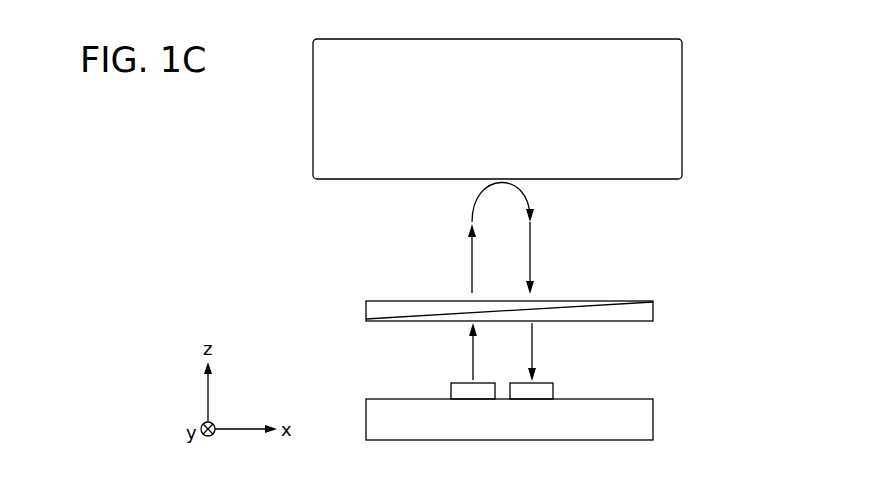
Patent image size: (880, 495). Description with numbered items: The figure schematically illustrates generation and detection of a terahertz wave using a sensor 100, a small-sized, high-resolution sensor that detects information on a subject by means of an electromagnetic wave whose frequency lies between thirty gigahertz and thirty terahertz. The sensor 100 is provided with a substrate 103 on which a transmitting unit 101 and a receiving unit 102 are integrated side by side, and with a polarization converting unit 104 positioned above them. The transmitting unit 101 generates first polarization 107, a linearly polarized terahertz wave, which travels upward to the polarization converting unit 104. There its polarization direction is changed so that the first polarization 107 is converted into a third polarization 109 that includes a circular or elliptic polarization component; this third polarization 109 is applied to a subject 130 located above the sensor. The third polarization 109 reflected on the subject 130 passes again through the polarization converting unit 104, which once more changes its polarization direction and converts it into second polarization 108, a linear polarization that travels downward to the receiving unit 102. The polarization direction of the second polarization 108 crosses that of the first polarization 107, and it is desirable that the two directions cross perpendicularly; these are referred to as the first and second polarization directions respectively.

The sensor 100 is at (517, 480).
The transmitting unit 101 is at (450, 389).
The receiving unit 102 is at (552, 391).
The substrate 103 is at (633, 423).
The polarization converting unit 104 is at (645, 312).
The first polarization 107 is at (472, 352).
The second polarization 108 is at (533, 347).
The third polarization 109 is at (471, 252).
The subject 130 is at (660, 118).